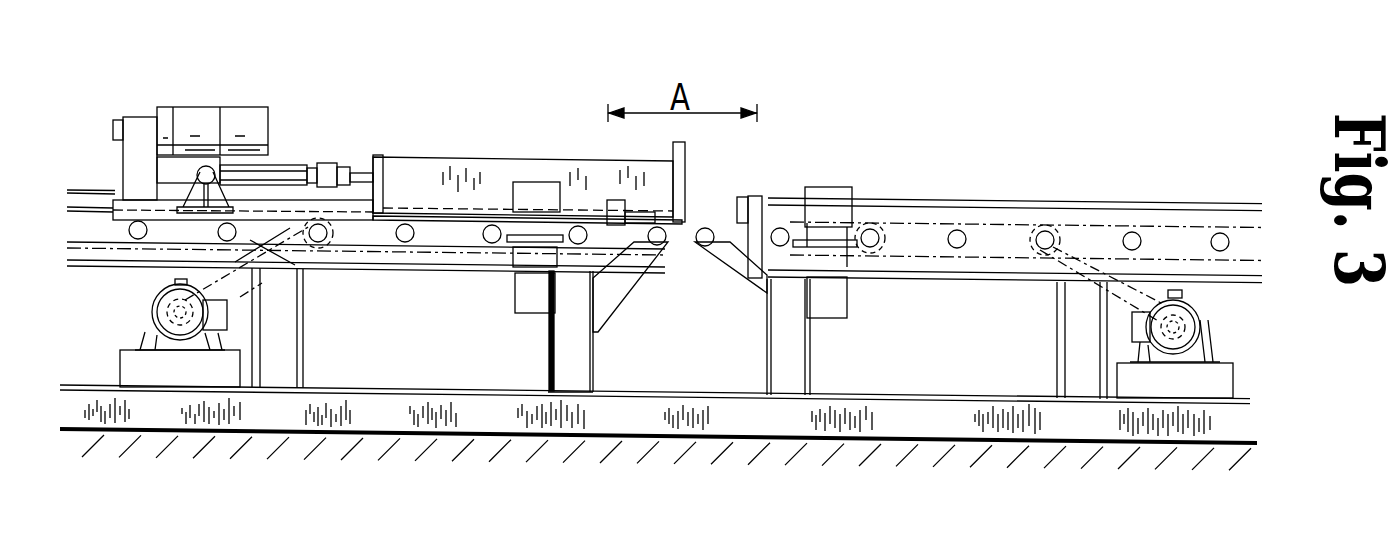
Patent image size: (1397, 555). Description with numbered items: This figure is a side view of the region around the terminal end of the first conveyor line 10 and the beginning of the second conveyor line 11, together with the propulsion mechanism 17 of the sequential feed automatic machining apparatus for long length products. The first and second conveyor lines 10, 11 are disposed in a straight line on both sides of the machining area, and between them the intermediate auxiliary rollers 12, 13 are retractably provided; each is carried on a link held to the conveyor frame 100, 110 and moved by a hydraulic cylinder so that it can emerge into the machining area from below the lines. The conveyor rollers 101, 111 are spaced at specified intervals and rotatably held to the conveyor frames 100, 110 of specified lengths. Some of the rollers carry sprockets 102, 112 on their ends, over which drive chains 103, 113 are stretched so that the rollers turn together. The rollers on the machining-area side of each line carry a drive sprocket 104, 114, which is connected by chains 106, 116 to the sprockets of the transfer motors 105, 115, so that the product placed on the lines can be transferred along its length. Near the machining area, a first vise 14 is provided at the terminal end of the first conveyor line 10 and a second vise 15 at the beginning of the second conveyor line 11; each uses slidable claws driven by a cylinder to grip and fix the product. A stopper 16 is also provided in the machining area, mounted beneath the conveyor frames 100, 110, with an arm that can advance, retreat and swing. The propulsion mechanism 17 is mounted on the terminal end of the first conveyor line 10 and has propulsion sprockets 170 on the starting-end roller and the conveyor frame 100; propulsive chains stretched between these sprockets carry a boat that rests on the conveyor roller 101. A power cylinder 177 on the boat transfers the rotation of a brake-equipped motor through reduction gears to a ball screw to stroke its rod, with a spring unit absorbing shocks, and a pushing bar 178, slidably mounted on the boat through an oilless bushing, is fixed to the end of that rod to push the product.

The first conveyor line 10 is at (352, 244).
The second conveyor line 11 is at (994, 249).
The intermediate auxiliary roller 12 is at (632, 278).
The intermediate auxiliary roller 13 is at (735, 283).
The first vise 14 is at (540, 190).
The second vise 15 is at (826, 190).
The stopper 16 is at (617, 200).
The propulsion mechanism 17 is at (399, 120).
The conveyor frame 100 is at (92, 266).
The conveyor roller 101 is at (117, 230).
The sprocket 102 is at (505, 235).
The drive chain 103 is at (430, 242).
The drive sprocket 104 is at (330, 228).
The transfer motor 105 is at (158, 318).
The chain 106 is at (263, 282).
The conveyor frame 110 is at (1065, 198).
The conveyor roller 111 is at (1220, 233).
The sprocket 112 is at (872, 230).
The drive chain 113 is at (930, 256).
The drive sprocket 114 is at (1040, 250).
The transfer motor 115 is at (1192, 330).
The chain 116 is at (1072, 347).
The propulsion sprocket 170 is at (437, 233).
The power cylinder 177 is at (238, 107).
The pushing bar 178 is at (470, 165).